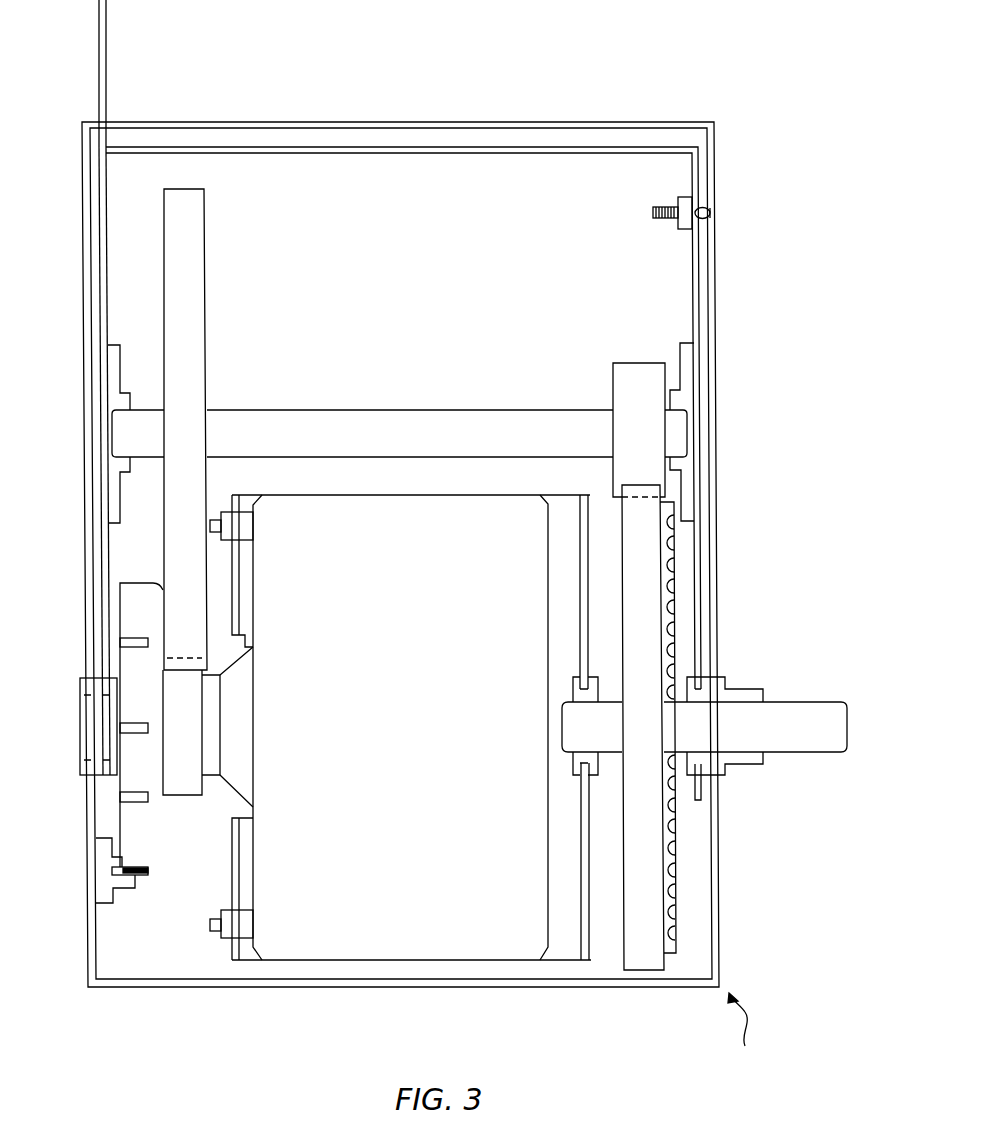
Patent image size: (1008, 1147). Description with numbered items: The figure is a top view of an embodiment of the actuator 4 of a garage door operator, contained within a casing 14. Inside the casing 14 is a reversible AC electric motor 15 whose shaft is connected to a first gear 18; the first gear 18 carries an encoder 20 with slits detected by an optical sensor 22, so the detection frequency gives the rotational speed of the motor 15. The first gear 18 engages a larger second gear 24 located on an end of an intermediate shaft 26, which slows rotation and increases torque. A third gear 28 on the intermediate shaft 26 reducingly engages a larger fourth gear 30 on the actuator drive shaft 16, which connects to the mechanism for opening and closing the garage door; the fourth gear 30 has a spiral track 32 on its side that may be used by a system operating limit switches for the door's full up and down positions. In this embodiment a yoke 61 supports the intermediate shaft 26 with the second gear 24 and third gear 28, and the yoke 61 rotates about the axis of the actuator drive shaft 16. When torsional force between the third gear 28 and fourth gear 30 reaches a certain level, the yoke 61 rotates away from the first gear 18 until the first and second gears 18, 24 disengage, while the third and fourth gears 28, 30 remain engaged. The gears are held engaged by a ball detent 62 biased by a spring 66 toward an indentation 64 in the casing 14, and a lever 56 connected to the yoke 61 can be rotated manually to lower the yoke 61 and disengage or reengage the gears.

The actuator 4 is at (745, 1035).
The casing 14 is at (606, 122).
The reversible AC electric motor 15 is at (490, 947).
The actuator drive shaft 16 is at (803, 708).
The first gear 18 is at (185, 788).
The encoder 20 is at (157, 870).
The optical sensor 22 is at (105, 900).
The second gear 24 is at (195, 240).
The intermediate shaft 26 is at (133, 433).
The third gear 28 is at (643, 365).
The fourth gear 30 is at (645, 562).
The spiral track 32 is at (672, 617).
The lever 56 is at (104, 14).
The yoke 61 is at (697, 180).
The ball detent 62 is at (709, 211).
The indentation 64 is at (712, 215).
The spring 66 is at (670, 220).